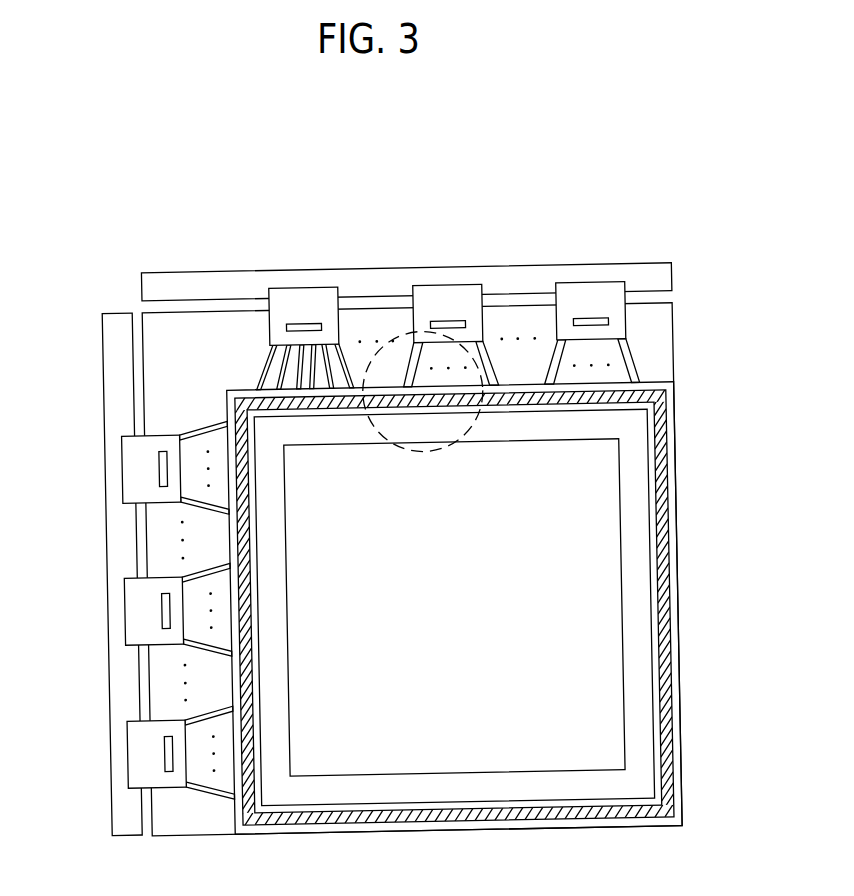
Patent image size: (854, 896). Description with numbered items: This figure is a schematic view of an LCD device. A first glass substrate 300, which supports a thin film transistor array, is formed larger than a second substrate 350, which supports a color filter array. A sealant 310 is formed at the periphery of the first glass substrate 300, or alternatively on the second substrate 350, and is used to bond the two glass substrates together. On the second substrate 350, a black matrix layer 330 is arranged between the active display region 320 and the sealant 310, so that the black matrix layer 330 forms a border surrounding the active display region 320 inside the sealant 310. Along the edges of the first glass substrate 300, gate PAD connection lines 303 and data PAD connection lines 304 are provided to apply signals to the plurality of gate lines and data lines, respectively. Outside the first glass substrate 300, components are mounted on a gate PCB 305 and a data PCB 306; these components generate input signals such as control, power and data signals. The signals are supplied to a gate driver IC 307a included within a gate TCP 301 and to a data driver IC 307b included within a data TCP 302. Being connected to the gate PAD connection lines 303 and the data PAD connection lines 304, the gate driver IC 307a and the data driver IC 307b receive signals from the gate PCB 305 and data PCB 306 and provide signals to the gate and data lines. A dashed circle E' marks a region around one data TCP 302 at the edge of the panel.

The first glass substrate 300 is at (143, 677).
The gate TCP 301 is at (104, 469).
The data TCP 302 is at (312, 303).
The gate PAD connection lines 303 is at (207, 563).
The data PAD connection lines 304 is at (271, 364).
The gate PCB 305 is at (119, 355).
The data PCB 306 is at (377, 277).
The gate driver IC 307a is at (160, 464).
The data driver IC 307b is at (463, 323).
The sealant 310 is at (661, 690).
The active display region 320 is at (595, 576).
The black matrix layer 330 is at (633, 647).
The second substrate 350 is at (677, 732).
The enlarged region E' is at (421, 329).